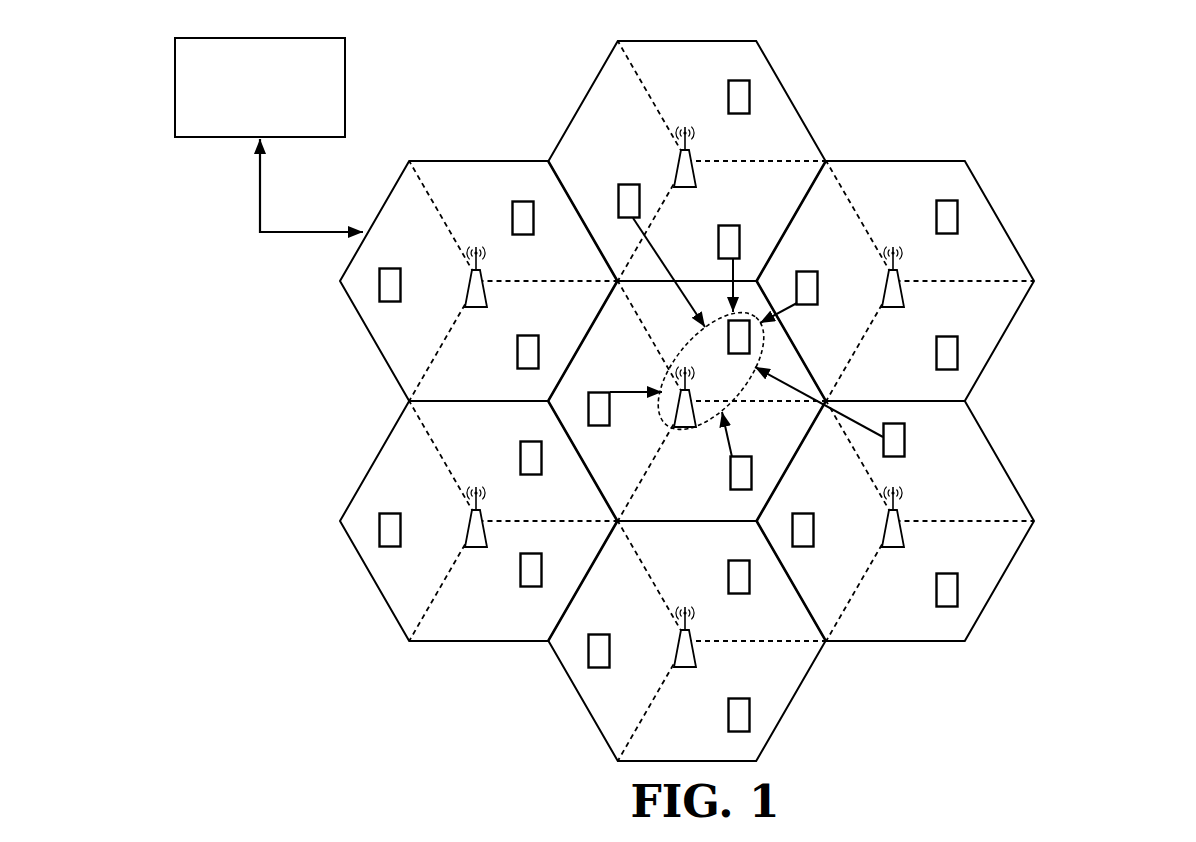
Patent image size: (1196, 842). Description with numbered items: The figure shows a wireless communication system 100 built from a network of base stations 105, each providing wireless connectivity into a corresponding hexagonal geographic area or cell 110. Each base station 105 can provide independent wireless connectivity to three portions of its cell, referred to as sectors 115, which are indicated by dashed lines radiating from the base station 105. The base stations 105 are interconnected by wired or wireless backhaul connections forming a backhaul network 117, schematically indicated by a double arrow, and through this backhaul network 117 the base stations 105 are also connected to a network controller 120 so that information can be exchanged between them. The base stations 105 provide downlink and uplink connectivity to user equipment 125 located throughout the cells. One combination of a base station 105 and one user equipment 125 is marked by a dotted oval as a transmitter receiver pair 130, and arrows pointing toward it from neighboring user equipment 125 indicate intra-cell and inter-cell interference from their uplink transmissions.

The wireless communication system 100 is at (1043, 63).
The base station 105 is at (468, 523).
The cell 110 is at (372, 578).
The sector 115 is at (497, 636).
The backhaul network 117 is at (252, 208).
The network controller 120 is at (246, 122).
The user equipment 125 is at (519, 460).
The transmitter receiver pair 130 is at (680, 347).